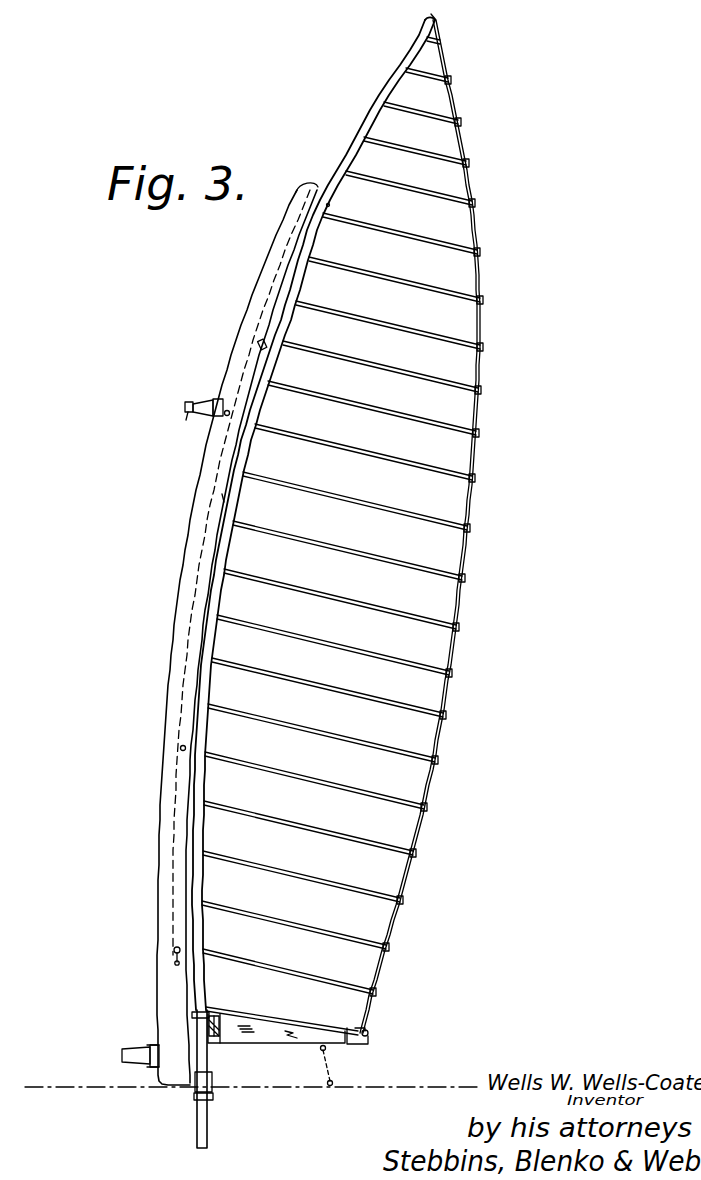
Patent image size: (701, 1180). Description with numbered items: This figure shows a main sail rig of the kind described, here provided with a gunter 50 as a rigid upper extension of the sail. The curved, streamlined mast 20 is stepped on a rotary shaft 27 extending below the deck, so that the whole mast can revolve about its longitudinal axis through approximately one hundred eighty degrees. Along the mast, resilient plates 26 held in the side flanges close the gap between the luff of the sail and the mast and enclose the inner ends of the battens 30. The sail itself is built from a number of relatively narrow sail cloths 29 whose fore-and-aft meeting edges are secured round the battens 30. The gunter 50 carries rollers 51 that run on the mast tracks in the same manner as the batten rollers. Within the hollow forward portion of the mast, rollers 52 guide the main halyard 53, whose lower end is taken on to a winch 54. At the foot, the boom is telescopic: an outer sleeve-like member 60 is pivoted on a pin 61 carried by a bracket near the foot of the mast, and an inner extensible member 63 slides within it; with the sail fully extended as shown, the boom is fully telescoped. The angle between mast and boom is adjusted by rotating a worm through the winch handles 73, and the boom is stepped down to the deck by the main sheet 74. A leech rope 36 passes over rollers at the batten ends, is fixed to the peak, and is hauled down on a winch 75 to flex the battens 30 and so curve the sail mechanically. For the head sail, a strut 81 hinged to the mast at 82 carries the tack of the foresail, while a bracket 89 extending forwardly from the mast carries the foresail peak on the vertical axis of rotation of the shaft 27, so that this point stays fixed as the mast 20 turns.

The mast 20 is at (280, 233).
The plates 26 is at (329, 205).
The rotary shaft 27 is at (210, 1112).
The sail cloths 29 is at (460, 547).
The battens 30 is at (490, 455).
The leech rope 36 is at (463, 598).
The gunter 50 is at (363, 117).
The rollers 51 is at (284, 274).
The rollers 52 is at (312, 186).
The main halyard 53 is at (221, 498).
The winch 54 is at (173, 953).
The outer sleeve-like member 60 is at (258, 1044).
The pin 61 is at (219, 1036).
The inner extensible member 63 is at (350, 1044).
The winch handles 73 is at (212, 1015).
The main sheet 74 is at (321, 1052).
The winch 75 is at (369, 1036).
The strut 81 is at (130, 1049).
The hinge 82 is at (135, 1066).
The bracket 89 is at (207, 399).